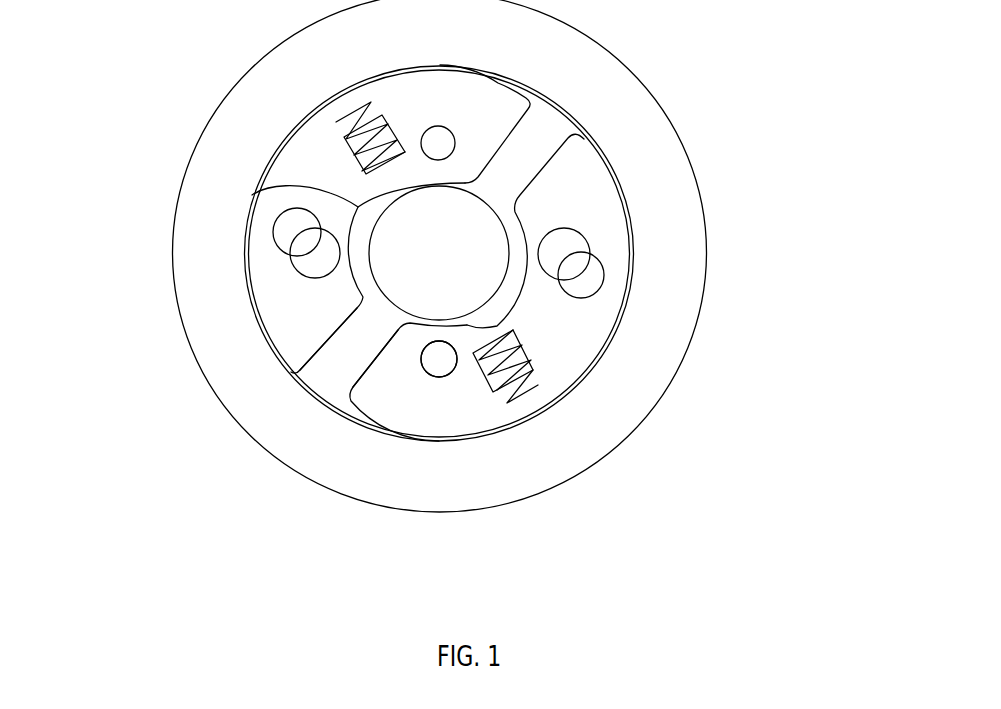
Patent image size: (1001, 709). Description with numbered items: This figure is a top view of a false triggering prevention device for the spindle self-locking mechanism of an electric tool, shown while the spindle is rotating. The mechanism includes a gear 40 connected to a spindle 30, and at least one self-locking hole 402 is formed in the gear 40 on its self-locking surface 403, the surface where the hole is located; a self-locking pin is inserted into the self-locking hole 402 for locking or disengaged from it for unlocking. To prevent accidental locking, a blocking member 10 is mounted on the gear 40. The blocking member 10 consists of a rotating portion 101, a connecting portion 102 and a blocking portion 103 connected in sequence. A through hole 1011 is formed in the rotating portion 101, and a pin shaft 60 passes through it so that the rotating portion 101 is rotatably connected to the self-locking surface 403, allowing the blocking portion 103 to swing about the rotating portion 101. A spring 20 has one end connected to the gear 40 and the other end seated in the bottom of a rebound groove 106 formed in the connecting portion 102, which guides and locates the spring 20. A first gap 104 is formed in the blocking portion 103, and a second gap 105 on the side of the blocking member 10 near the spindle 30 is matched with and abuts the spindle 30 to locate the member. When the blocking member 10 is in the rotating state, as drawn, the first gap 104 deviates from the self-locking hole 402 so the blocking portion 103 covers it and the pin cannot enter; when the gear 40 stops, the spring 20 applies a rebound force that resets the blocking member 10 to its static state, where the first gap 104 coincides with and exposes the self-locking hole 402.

The blocking member 10 is at (276, 132).
The rotating portion 101 is at (410, 367).
The through hole 1011 is at (448, 374).
The connecting portion 102 is at (497, 403).
The blocking portion 103 is at (607, 222).
The first gap 104 is at (313, 260).
The second gap 105 is at (255, 192).
The rebound groove 106 is at (513, 342).
The spring 20 is at (538, 386).
The spindle 30 is at (400, 277).
The gear 40 is at (673, 242).
The self-locking hole 402 is at (562, 243).
The self-locking surface 403 is at (330, 380).
The pin shaft 60 is at (438, 362).